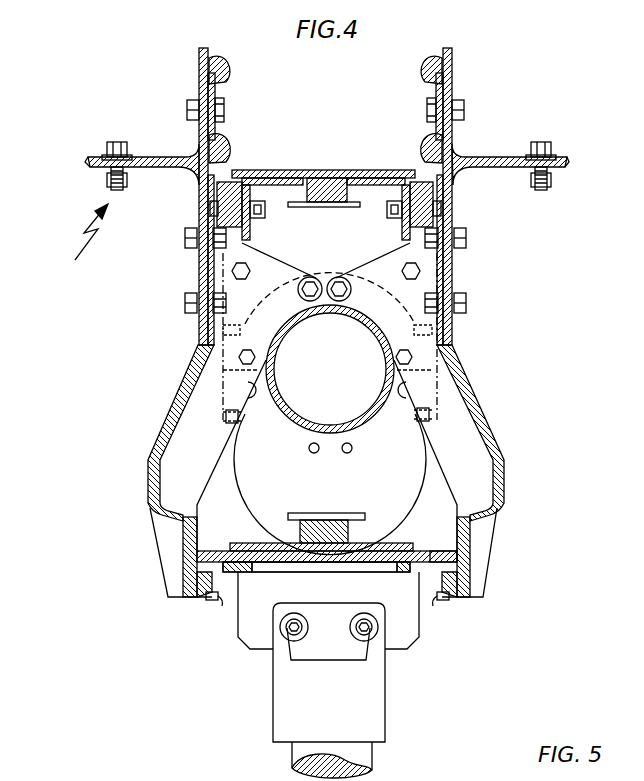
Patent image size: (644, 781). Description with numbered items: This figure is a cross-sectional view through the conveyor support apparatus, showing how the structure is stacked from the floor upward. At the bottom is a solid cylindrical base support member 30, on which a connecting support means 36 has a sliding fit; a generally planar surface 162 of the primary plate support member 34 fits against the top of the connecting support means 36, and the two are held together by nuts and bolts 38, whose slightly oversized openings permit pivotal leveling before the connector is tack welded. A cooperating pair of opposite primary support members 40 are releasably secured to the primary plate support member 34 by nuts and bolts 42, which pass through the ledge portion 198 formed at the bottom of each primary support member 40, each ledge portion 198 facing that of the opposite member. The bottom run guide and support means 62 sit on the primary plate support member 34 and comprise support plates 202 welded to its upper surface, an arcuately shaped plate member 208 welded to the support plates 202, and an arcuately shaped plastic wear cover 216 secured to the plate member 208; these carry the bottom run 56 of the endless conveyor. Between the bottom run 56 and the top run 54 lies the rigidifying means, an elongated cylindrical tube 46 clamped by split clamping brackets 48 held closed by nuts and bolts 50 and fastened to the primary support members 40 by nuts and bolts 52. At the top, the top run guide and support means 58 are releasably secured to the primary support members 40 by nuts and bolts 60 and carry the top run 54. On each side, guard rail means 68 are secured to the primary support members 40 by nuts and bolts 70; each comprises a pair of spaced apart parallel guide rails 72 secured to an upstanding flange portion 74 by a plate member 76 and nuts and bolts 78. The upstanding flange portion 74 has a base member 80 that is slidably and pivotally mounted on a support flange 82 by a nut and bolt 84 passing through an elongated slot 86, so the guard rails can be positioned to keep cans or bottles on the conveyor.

The base support member 30 is at (293, 757).
The primary plate support member 34 is at (421, 633).
The connecting support means 36 is at (373, 708).
The nuts and bolts 38 is at (284, 634).
The primary support member 40 is at (168, 412).
The nuts and bolts 42 is at (214, 600).
The elongated cylindrical tube 46 is at (395, 360).
The split clamping bracket 48 is at (383, 433).
The nuts and bolts 50 is at (237, 427).
The nuts and bolts 52 is at (315, 279).
The top run 54 is at (325, 171).
The bottom run 56 is at (370, 545).
The top run guide and support means 58 is at (294, 172).
The nuts and bolts 60 is at (251, 220).
The bottom run guide and support means 62 is at (438, 560).
The guard rail means 68 is at (79, 243).
The nuts and bolts 70 is at (184, 302).
The guide rail 72 is at (231, 70).
The upstanding flange portion 74 is at (199, 78).
The plate member 76 is at (222, 101).
The nuts and bolts 78 is at (186, 111).
The base member 80 is at (96, 157).
The support flange 82 is at (93, 176).
The nut and bolt 84 is at (113, 141).
The elongated slot 86 is at (143, 170).
The generally planar surface 162 is at (356, 604).
The ledge portion 198 is at (187, 594).
The support plate 202 is at (240, 614).
The arcuately shaped plate member 208 is at (284, 565).
The arcuately shaped plastic wear cover 216 is at (210, 556).